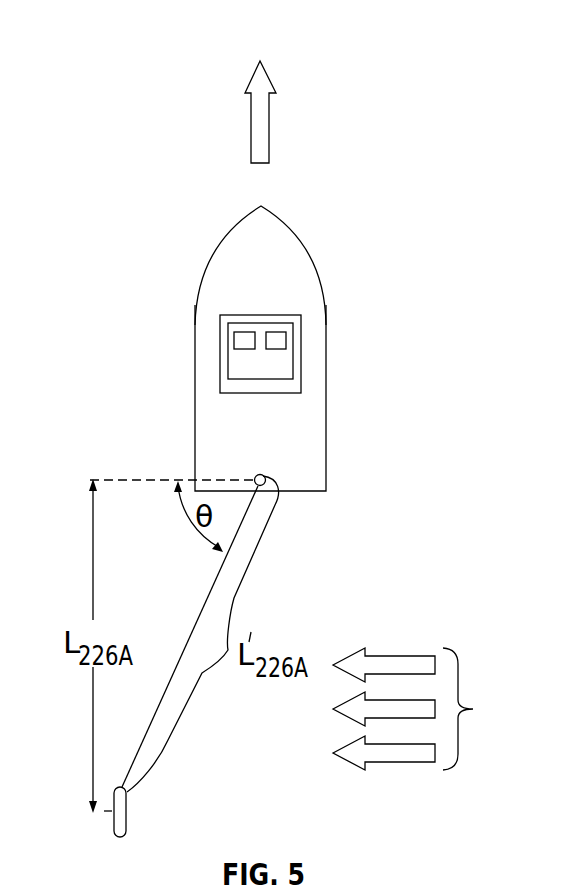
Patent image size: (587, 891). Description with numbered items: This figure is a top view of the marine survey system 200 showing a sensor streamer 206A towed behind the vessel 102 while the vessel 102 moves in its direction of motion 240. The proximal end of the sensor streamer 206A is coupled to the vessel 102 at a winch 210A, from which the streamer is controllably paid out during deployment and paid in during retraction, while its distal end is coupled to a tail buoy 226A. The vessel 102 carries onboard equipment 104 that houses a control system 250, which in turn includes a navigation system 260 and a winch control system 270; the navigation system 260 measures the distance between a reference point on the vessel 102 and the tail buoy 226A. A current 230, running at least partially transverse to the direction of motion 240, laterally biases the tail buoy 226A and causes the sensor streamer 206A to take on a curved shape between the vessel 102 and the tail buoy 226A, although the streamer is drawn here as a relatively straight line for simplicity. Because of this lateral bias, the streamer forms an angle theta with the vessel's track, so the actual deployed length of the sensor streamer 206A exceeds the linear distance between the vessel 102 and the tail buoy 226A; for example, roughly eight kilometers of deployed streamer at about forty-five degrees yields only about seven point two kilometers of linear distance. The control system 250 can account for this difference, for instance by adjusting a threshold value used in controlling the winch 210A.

The marine survey system 200 is at (106, 42).
The direction of motion 240 is at (269, 128).
The vessel 102 is at (219, 263).
The onboard equipment 104 is at (271, 348).
The navigation system 260 is at (228, 338).
The control system 250 is at (228, 372).
The winch control system 270 is at (286, 341).
The winch 210A is at (267, 478).
The sensor streamer 206A is at (212, 592).
The tail buoy 226A is at (128, 812).
The current 230 is at (427, 709).